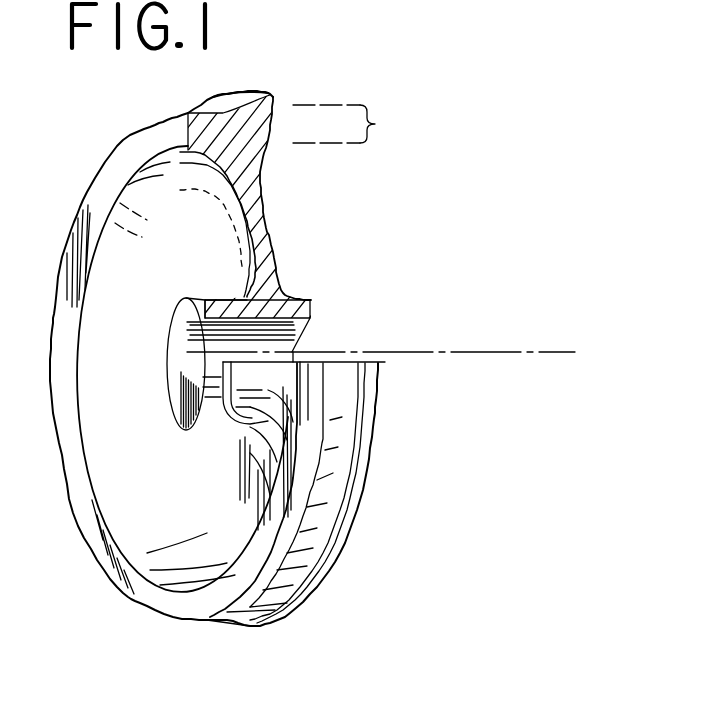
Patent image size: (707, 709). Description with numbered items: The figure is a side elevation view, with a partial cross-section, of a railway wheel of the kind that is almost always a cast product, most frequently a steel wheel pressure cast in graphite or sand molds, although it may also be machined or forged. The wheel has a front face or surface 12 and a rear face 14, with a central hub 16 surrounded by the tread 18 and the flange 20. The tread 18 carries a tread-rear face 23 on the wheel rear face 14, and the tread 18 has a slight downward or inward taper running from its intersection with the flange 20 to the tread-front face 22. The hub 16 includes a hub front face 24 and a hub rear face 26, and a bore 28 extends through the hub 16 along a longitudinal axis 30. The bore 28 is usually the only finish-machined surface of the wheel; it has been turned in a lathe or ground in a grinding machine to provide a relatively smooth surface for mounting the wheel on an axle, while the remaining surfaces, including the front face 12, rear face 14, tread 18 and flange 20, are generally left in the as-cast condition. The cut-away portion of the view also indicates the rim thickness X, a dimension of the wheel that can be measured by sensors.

The front face 12 is at (200, 378).
The rear face 14 is at (284, 237).
The hub 16 is at (194, 301).
The tread 18 is at (222, 628).
The flange 20 is at (314, 603).
The tread-front face 22 is at (143, 603).
The tread-rear face 23 is at (283, 93).
The hub front face 24 is at (183, 427).
The hub rear face 26 is at (313, 310).
The bore 28 is at (200, 357).
The longitudinal axis 30 is at (452, 350).
The rim thickness X is at (375, 124).